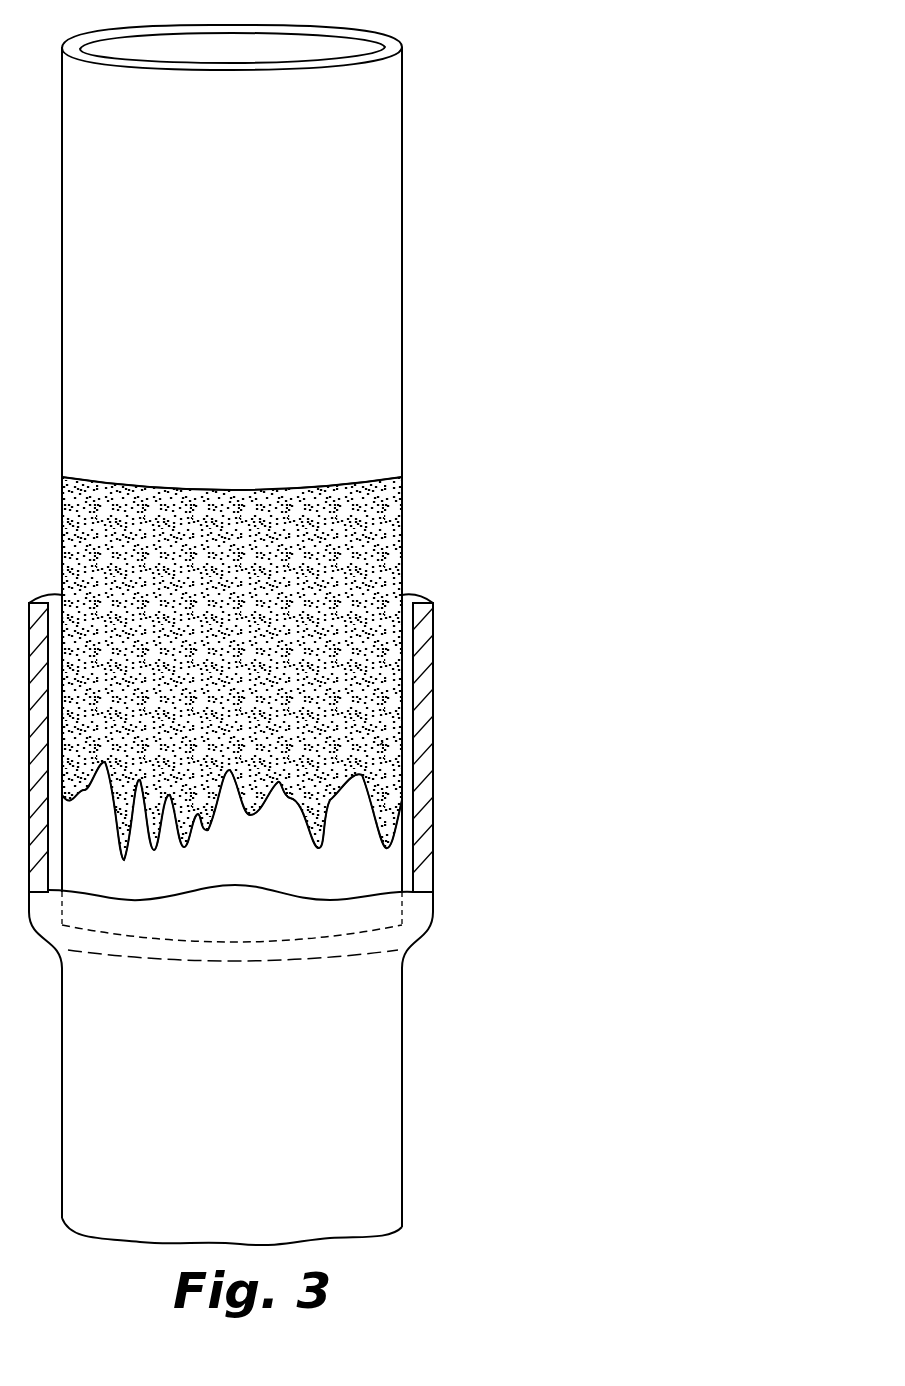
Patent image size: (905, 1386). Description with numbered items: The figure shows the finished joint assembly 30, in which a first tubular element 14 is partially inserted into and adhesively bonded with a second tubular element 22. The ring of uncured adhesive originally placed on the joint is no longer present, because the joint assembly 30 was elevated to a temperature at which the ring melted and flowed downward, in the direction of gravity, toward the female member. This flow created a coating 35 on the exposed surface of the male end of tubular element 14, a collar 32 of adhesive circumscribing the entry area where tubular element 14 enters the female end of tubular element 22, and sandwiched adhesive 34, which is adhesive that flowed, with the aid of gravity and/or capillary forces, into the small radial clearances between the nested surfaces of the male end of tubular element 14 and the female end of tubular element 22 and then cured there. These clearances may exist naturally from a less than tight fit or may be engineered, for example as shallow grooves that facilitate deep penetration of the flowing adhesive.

The joint assembly 30 is at (455, 43).
The tubular element 14 is at (240, 290).
The tubular element 22 is at (240, 1098).
The collar 32 is at (408, 597).
The sandwiched adhesive 34 is at (380, 745).
The coating 35 is at (238, 508).